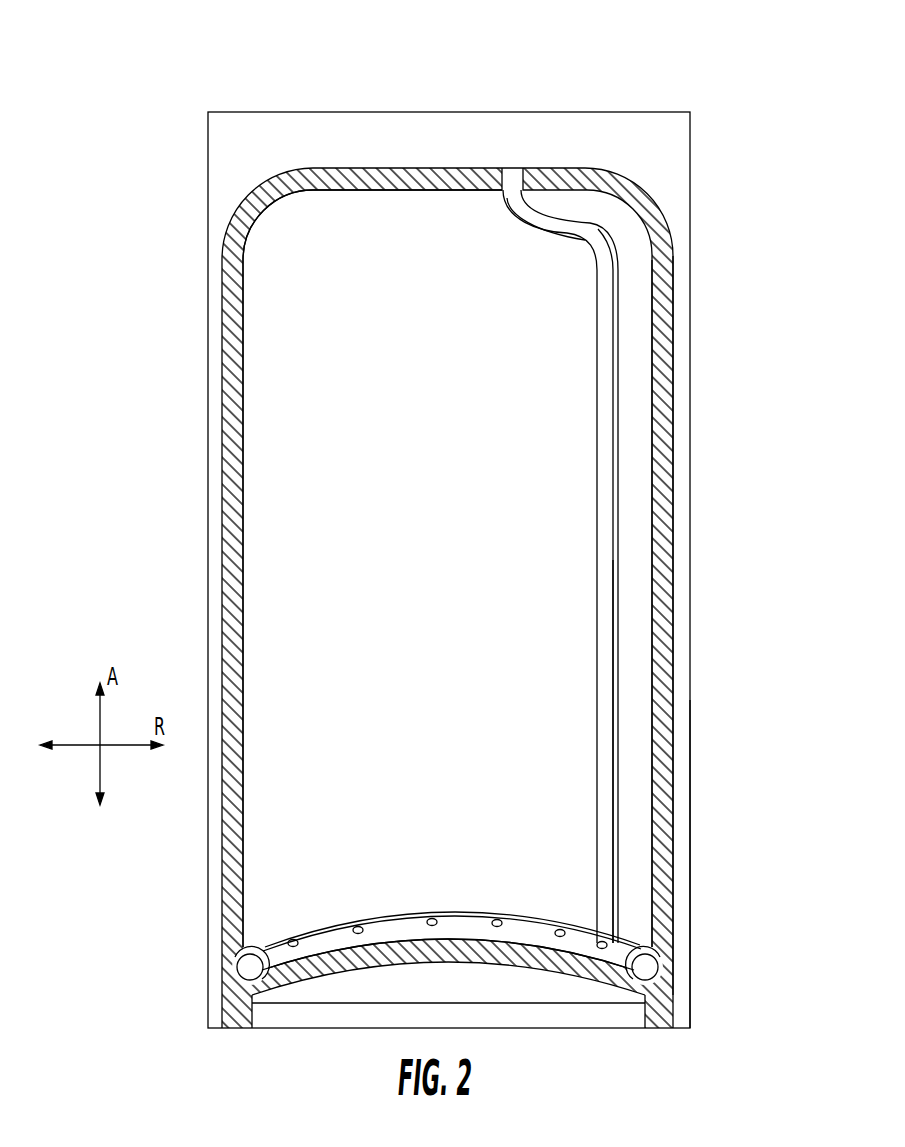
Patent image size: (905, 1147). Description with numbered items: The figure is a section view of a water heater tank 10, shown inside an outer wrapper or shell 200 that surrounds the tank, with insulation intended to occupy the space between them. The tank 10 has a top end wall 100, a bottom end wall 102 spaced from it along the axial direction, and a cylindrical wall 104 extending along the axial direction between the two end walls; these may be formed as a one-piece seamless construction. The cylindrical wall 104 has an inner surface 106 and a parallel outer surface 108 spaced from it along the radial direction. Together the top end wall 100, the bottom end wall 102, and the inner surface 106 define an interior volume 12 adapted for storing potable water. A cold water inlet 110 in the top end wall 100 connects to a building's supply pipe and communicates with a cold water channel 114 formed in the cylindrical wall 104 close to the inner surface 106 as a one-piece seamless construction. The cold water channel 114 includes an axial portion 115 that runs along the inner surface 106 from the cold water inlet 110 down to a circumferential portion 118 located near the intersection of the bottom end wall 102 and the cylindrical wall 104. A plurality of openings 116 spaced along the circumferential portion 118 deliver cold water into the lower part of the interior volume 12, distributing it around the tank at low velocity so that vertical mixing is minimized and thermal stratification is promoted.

The water heater tank 10 is at (719, 45).
The interior volume 12 is at (298, 404).
The top end wall 100 is at (360, 178).
The bottom end wall 102 is at (445, 962).
The cylindrical wall 104 is at (660, 530).
The inner surface 106 is at (342, 790).
The outer surface 108 is at (692, 762).
The cold water inlet 110 is at (512, 178).
The cold water channel 114 is at (610, 477).
The axial portion 115 is at (610, 610).
The openings 116 is at (357, 928).
The circumferential portion 118 is at (394, 927).
The shell 200 is at (692, 167).